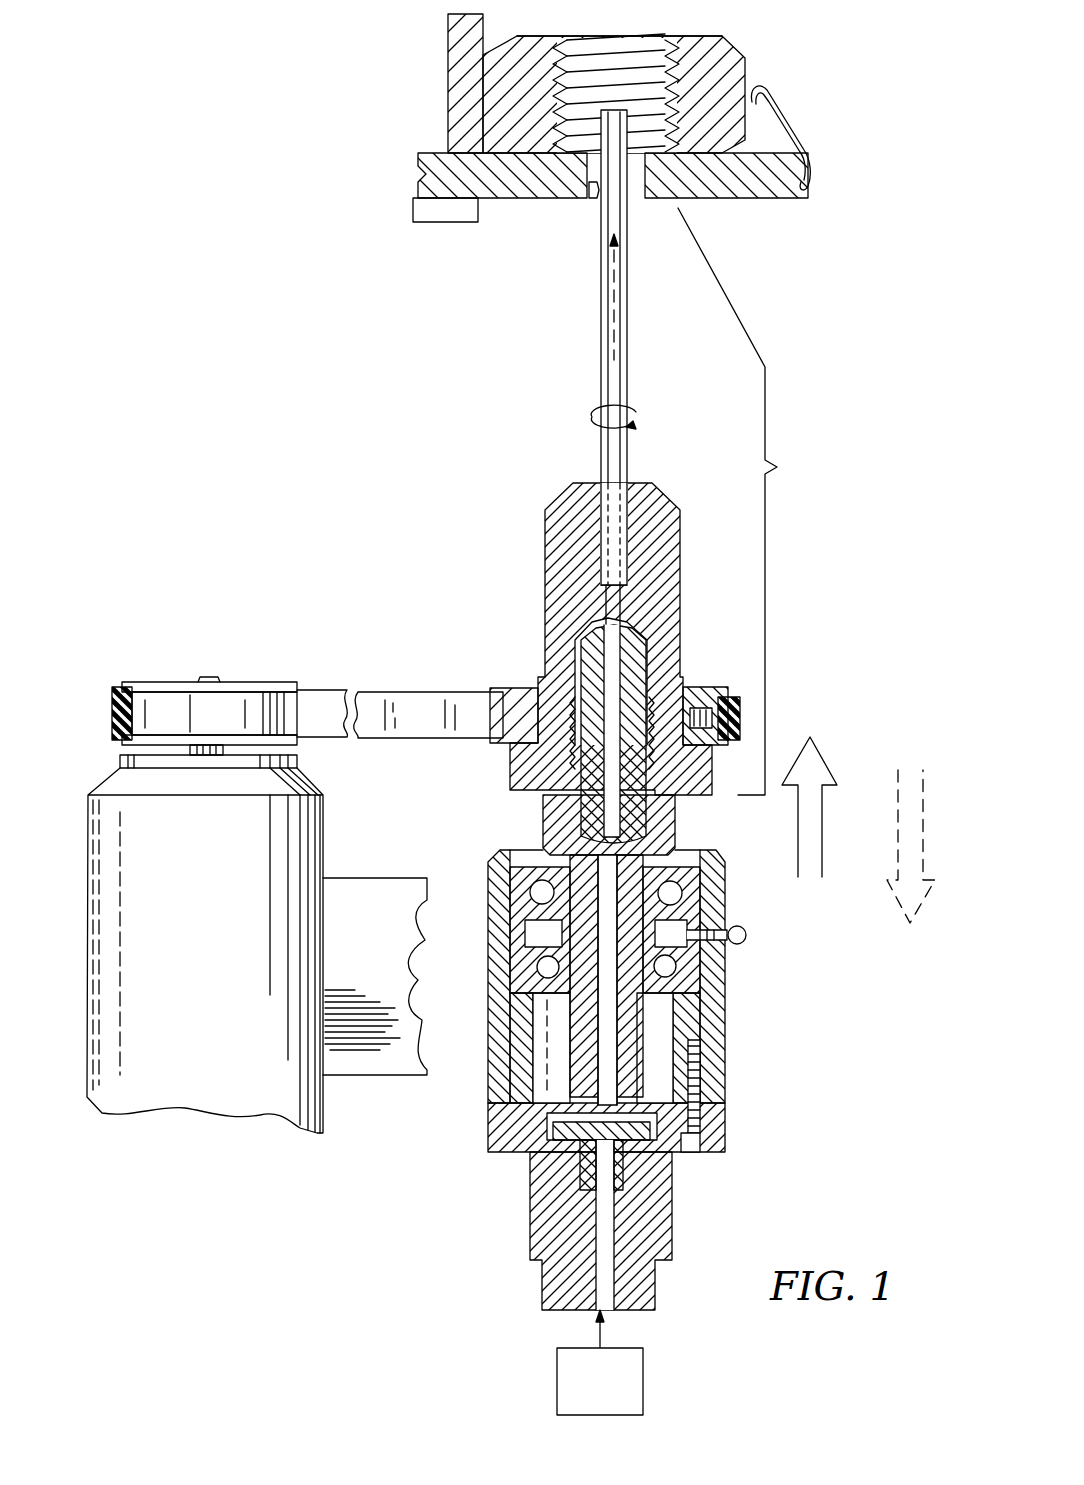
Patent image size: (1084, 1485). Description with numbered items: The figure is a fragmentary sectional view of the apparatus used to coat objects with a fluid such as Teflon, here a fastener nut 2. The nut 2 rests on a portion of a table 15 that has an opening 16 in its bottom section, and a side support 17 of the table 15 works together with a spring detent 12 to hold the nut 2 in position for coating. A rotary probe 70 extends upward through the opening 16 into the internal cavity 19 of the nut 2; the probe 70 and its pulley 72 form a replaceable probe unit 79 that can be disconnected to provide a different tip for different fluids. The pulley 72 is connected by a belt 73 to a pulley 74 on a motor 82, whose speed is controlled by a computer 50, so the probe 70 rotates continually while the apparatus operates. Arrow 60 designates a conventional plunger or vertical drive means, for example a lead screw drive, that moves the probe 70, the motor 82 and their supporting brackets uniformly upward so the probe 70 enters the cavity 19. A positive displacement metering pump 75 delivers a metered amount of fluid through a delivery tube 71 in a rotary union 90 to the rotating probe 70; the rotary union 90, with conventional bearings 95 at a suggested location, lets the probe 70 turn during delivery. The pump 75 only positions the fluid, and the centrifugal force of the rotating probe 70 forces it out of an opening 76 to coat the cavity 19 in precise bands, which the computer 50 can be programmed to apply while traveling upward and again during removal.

The fastener nut 2 is at (728, 58).
The spring detent 12 is at (773, 127).
The table 15 is at (430, 174).
The opening 16 is at (597, 199).
The side support 17 is at (485, 28).
The internal cavity 19 is at (587, 117).
The computer 50 is at (830, 674).
The plunger means 60 is at (823, 840).
The rotary probe 70 is at (630, 357).
The delivery tube 71 is at (603, 1238).
The pulley 72 is at (708, 677).
The belt 73 is at (423, 692).
The pulley 74 is at (277, 683).
The positive displacement metering pump 75 is at (600, 1362).
The opening 76 is at (628, 108).
The replaceable probe unit 79 is at (777, 467).
The motor 82 is at (211, 993).
The rotary union 90 is at (732, 967).
The bearings 95 is at (676, 896).